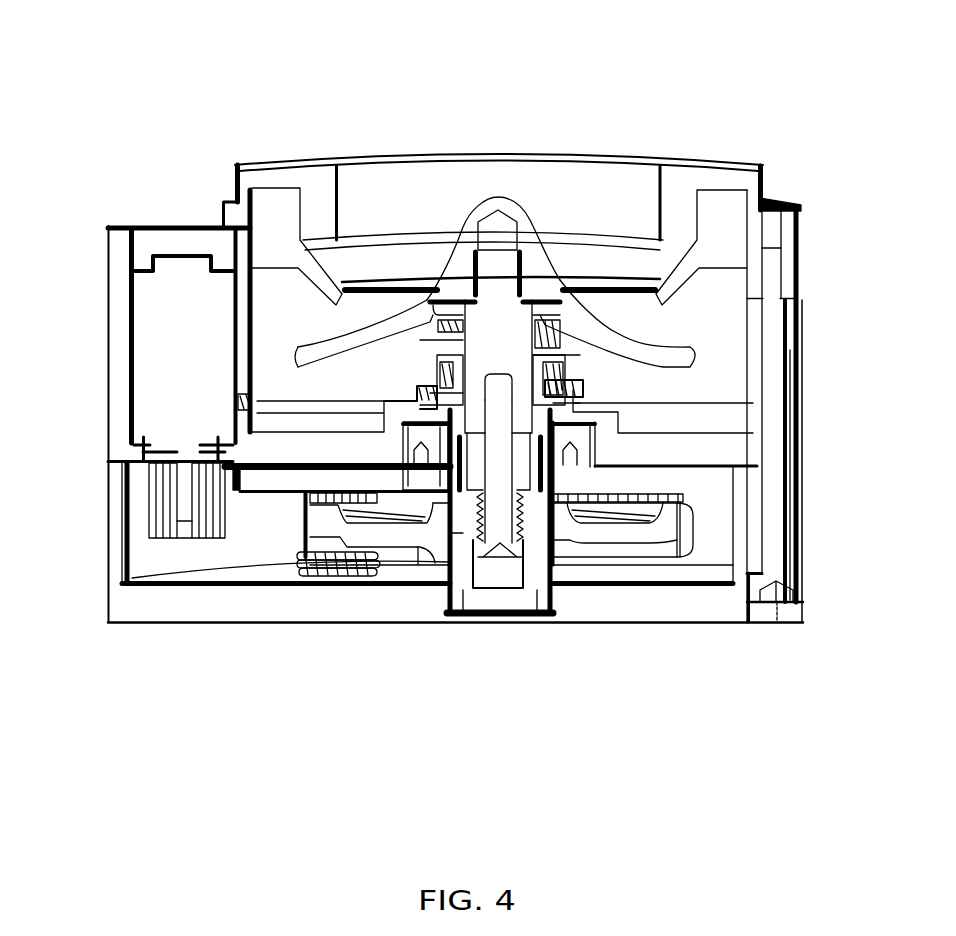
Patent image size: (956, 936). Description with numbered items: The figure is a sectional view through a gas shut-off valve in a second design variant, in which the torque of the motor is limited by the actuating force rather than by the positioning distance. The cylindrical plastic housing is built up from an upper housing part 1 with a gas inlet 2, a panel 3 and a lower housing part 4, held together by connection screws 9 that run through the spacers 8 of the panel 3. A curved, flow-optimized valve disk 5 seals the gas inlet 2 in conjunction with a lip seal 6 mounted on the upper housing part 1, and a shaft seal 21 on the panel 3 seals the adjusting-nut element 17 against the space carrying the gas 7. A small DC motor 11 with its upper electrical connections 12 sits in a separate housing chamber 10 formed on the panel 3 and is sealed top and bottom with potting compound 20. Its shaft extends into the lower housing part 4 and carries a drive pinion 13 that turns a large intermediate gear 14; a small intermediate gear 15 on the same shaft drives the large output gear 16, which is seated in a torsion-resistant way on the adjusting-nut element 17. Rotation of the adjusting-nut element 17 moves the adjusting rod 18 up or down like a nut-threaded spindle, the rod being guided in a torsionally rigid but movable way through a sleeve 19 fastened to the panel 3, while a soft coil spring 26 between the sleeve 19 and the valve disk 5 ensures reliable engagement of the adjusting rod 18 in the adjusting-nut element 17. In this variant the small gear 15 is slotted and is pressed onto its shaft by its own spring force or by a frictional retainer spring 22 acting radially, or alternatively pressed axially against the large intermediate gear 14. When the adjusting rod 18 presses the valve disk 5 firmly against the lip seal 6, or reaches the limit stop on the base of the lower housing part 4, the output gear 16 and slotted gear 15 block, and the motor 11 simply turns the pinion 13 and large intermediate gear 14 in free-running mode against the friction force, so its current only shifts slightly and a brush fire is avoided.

The upper housing part 1 is at (316, 190).
The gas inlet 2 is at (418, 140).
The panel 3 is at (695, 415).
The lower housing part 4 is at (648, 605).
The valve disk 5 is at (498, 195).
The lip seal 6 is at (590, 257).
The space carrying the gas 7 is at (310, 337).
The spacers 8 is at (790, 407).
The connection screws 9 is at (773, 550).
The separate housing chamber 10 is at (120, 250).
The small DC motor 11 is at (173, 288).
The electrical connections 12 is at (197, 232).
The drive pinion 13 is at (163, 512).
The large intermediate gear 14 is at (267, 477).
The small intermediate gear 15 is at (307, 527).
The output gear 16 is at (667, 533).
The adjusting-nut element 17 is at (530, 513).
The adjusting rod 18 is at (490, 327).
The sleeve 19 is at (238, 401).
The potting compound 20 is at (137, 447).
The shaft seal 21 is at (583, 448).
The frictional retainer spring 22 is at (370, 577).
The coil spring 26 is at (560, 325).